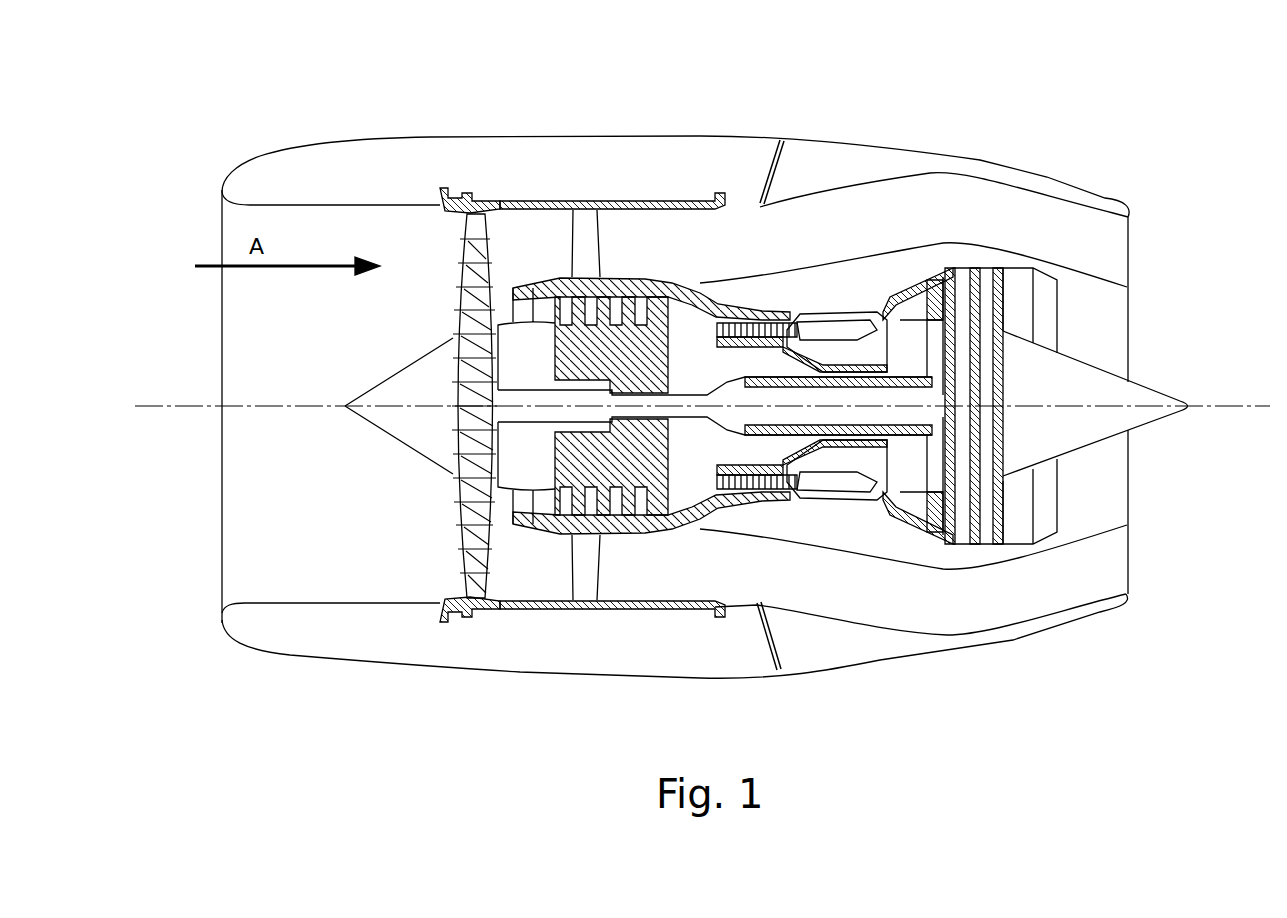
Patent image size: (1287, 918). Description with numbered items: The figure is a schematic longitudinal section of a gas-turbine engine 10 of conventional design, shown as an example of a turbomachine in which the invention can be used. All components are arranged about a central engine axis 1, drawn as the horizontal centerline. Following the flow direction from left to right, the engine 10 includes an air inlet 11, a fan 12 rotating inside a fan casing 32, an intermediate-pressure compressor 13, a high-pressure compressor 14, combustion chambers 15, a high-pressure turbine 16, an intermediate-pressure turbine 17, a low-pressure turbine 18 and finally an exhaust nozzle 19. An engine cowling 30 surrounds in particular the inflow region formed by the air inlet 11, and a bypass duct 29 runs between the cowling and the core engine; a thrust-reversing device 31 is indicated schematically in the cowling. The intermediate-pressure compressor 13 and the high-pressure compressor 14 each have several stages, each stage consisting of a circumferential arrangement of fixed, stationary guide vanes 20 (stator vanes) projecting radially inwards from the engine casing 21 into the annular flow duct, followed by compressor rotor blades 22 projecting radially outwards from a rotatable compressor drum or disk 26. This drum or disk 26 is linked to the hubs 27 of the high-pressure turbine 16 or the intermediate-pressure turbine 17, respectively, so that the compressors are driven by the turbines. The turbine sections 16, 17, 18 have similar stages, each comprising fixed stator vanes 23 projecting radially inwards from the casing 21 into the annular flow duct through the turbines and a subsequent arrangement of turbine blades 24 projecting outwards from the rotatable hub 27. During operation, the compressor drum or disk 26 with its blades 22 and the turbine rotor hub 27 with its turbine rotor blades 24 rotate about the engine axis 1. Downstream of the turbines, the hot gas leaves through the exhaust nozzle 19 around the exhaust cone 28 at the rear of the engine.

The central engine axis 1 is at (268, 408).
The gas-turbine engine 10 is at (914, 195).
The air inlet 11 is at (397, 230).
The fan 12 is at (495, 230).
The intermediate-pressure compressor 13 is at (590, 352).
The high-pressure compressor 14 is at (740, 302).
The combustion chambers 15 is at (843, 282).
The high-pressure turbine 16 is at (893, 310).
The intermediate-pressure turbine 17 is at (927, 292).
The low-pressure turbine 18 is at (1010, 272).
The exhaust nozzle 19 is at (1047, 323).
The guide vanes 20 is at (568, 500).
The engine casing 21 is at (615, 500).
The compressor rotor blades 22 is at (640, 500).
The stator vanes 23 is at (960, 517).
The turbine blades 24 is at (990, 570).
The compressor drum or disk 26 is at (673, 435).
The turbine rotor hub 27 is at (1000, 427).
The exhaust cone 28 is at (1137, 394).
The bypass duct 29 is at (665, 245).
The engine cowling 30 is at (392, 167).
The thrust-reversing device 31 is at (1100, 204).
The fan casing 32 is at (490, 233).